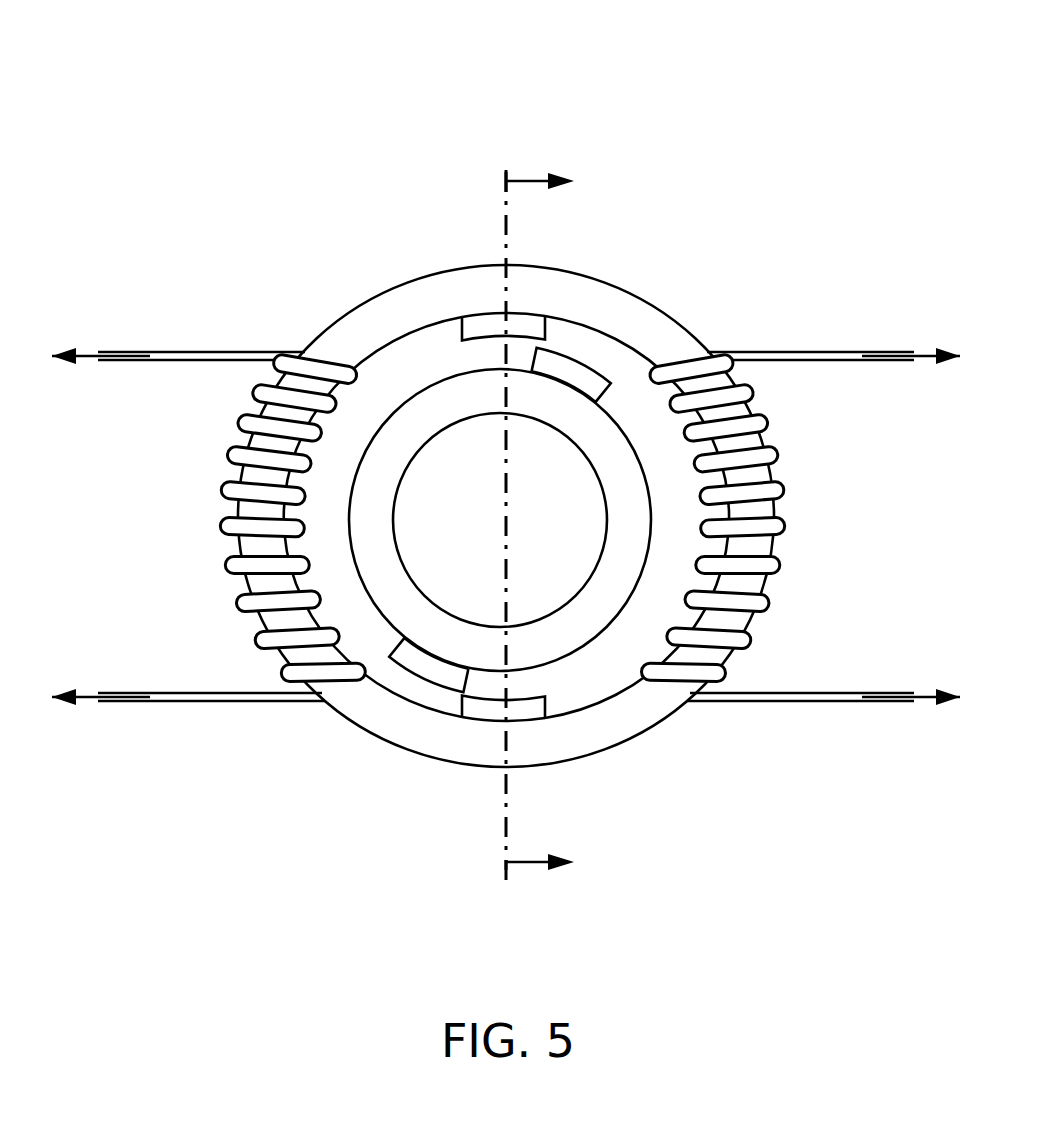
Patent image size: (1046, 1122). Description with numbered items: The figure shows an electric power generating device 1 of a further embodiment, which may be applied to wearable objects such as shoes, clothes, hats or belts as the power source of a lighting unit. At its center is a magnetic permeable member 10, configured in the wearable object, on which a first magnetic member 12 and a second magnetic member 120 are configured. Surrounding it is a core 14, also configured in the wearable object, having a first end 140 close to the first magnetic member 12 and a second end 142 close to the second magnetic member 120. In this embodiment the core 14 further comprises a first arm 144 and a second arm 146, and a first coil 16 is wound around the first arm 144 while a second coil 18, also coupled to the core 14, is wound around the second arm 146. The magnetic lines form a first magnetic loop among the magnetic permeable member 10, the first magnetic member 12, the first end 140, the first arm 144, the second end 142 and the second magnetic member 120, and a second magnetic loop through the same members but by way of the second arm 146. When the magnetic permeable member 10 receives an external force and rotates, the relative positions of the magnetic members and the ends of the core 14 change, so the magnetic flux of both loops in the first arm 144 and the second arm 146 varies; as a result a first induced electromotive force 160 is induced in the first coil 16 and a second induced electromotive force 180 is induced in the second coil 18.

The electric power generating device 1 is at (456, 94).
The magnetic permeable member 10 is at (520, 700).
The first magnetic member 12 is at (607, 396).
The second magnetic member 120 is at (408, 678).
The core 14 is at (472, 263).
The first end 140 is at (462, 334).
The second end 142 is at (551, 698).
The first arm 144 is at (645, 317).
The second arm 146 is at (367, 317).
The first coil 16 is at (774, 448).
The first induced electromotive force 160 is at (925, 357).
The second coil 18 is at (238, 448).
The second induced electromotive force 180 is at (87, 357).